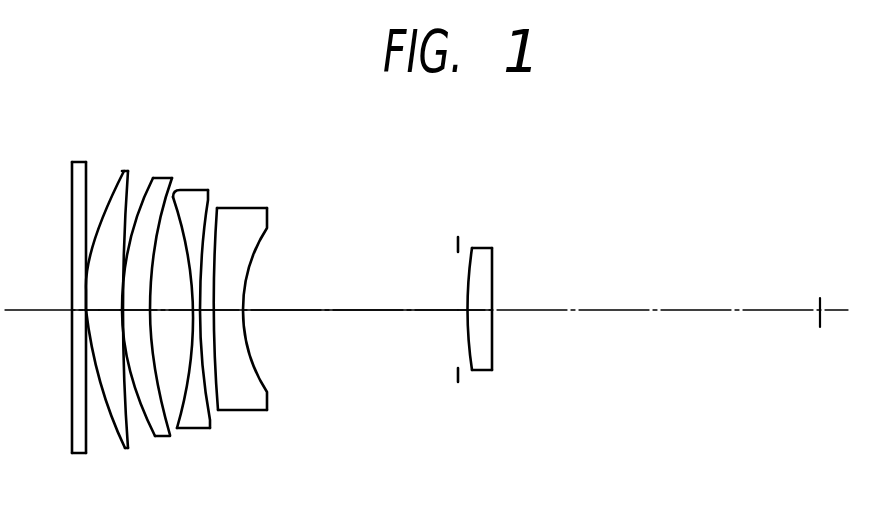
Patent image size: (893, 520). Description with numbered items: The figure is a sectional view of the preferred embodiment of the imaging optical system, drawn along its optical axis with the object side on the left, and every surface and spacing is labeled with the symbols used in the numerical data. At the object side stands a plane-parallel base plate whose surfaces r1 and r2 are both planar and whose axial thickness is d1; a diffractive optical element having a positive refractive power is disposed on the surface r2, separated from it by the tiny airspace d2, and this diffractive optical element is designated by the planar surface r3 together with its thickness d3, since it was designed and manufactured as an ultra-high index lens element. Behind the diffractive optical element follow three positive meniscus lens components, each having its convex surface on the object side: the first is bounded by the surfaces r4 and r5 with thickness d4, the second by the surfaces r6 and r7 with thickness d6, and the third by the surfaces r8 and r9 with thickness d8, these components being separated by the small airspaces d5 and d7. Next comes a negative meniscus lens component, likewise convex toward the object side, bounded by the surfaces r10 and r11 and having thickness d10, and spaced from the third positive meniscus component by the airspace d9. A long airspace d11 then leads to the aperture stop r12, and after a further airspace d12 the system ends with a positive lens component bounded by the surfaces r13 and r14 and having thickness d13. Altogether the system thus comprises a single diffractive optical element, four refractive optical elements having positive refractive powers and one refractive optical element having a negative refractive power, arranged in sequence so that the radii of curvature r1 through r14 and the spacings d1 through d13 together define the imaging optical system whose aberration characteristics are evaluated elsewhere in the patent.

The first surface radius of curvature r1 is at (72, 198).
The second surface radius of curvature r2 is at (87, 189).
The third surface radius of curvature r3 is at (88, 191).
The fourth surface radius of curvature r4 is at (107, 186).
The fifth surface radius of curvature r5 is at (127, 190).
The sixth surface radius of curvature r6 is at (152, 178).
The seventh surface radius of curvature r7 is at (163, 203).
The eighth surface radius of curvature r8 is at (176, 189).
The ninth surface radius of curvature r9 is at (204, 213).
The tenth surface radius of curvature r10 is at (220, 230).
The eleventh surface radius of curvature r11 is at (263, 232).
The aperture stop r12 is at (457, 247).
The thirteenth surface radius of curvature r13 is at (471, 250).
The fourteenth surface radius of curvature r14 is at (493, 270).
The base plate thickness d1 is at (80, 320).
The second airspace d2 is at (85, 307).
The diffractive optical element thickness d3 is at (97, 325).
The first meniscus lens thickness d4 is at (105, 310).
The fifth airspace d5 is at (121, 312).
The second meniscus lens thickness d6 is at (140, 312).
The seventh airspace d7 is at (153, 308).
The third meniscus lens thickness d8 is at (190, 311).
The ninth airspace d9 is at (203, 308).
The negative meniscus lens thickness d10 is at (230, 312).
The eleventh airspace d11 is at (322, 312).
The twelfth airspace d12 is at (470, 310).
The final positive lens thickness d13 is at (482, 312).